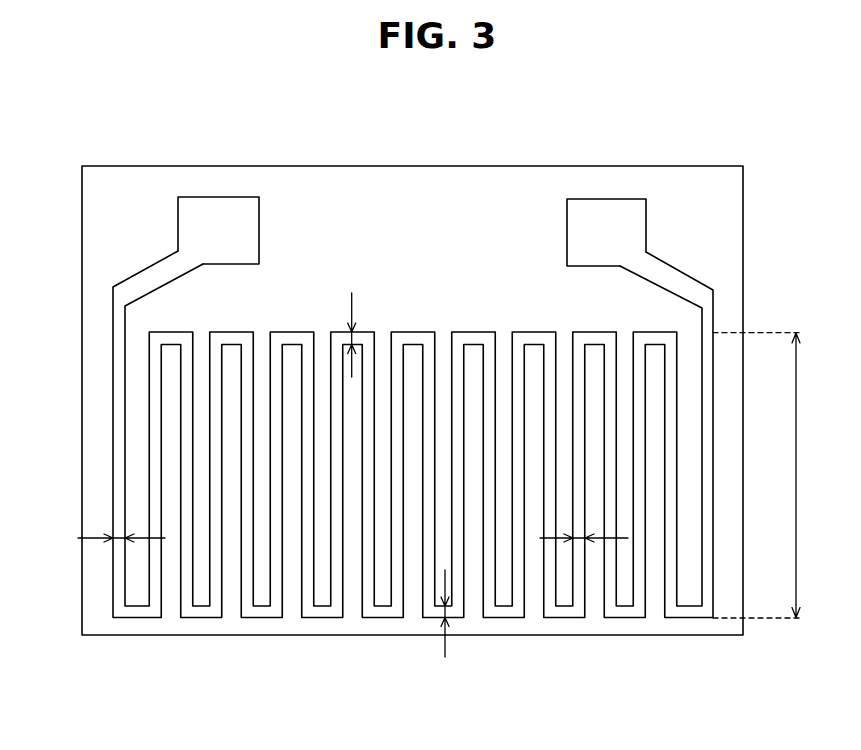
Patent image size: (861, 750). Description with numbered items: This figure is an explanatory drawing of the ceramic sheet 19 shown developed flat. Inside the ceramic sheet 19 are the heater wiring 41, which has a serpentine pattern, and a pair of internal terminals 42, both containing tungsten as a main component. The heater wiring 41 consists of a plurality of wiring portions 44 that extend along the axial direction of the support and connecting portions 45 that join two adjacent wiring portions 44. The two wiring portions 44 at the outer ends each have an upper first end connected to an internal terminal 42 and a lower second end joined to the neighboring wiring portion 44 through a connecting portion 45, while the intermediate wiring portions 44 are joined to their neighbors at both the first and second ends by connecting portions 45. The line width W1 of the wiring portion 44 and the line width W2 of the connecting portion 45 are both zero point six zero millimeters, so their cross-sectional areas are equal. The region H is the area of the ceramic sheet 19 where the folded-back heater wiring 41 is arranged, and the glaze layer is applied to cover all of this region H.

The ceramic sheet 19 is at (720, 205).
The heater wiring 41 is at (508, 613).
The internal terminal 42 is at (217, 212).
The wiring portion 44 is at (110, 387).
The connecting portion 45 is at (542, 338).
The line width of the wiring portion W1 is at (120, 537).
The line width of the connecting portion W2 is at (343, 335).
The region H is at (757, 475).